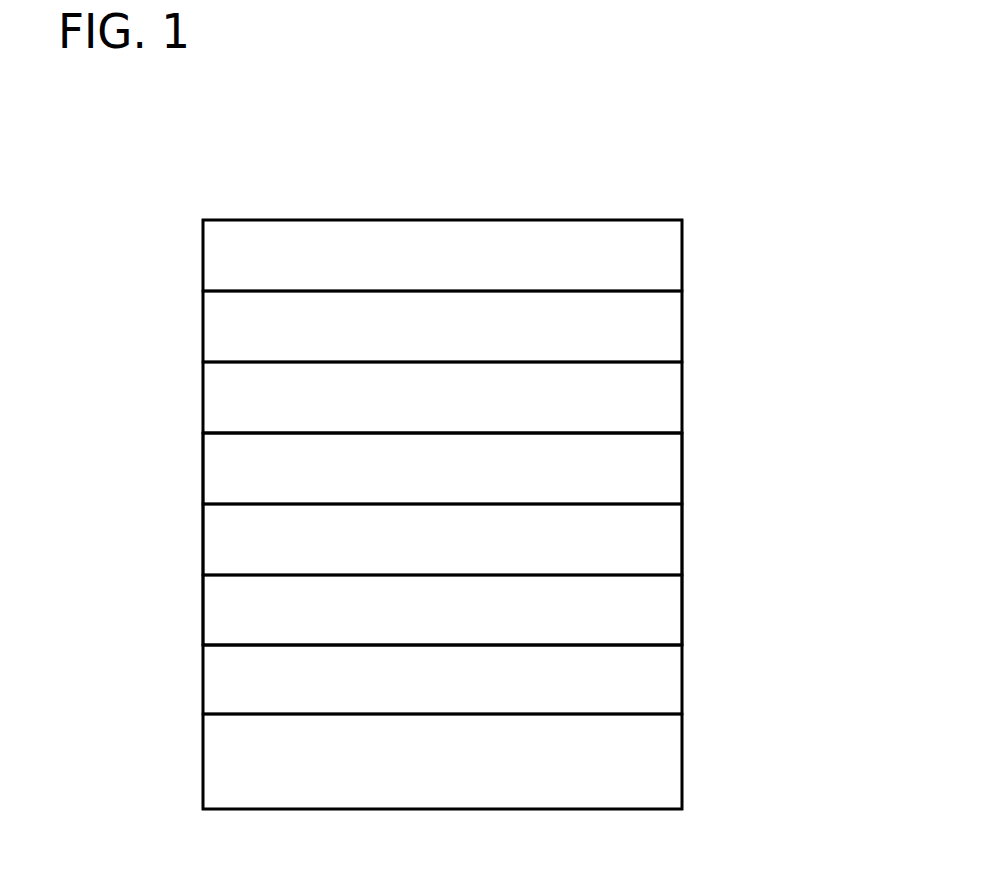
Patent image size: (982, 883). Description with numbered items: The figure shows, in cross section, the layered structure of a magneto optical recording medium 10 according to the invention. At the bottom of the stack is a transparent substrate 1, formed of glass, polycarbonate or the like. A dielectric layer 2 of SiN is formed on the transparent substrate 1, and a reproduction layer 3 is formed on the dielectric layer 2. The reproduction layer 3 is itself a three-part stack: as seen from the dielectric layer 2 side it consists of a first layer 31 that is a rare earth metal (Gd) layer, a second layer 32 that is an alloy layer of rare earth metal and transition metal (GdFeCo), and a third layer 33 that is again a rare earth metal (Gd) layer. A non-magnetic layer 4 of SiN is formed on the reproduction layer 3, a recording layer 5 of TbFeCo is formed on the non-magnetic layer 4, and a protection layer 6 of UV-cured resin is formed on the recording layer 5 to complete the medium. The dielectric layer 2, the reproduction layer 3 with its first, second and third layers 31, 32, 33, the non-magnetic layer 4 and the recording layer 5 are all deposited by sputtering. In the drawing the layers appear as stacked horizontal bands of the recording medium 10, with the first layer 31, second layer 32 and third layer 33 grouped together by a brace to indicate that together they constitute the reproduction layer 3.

The magneto optical recording medium 10 is at (731, 166).
The transparent substrate 1 is at (665, 766).
The dielectric layer 2 is at (667, 685).
The reproduction layer 3 is at (792, 455).
The first layer 31 is at (667, 616).
The second layer 32 is at (667, 546).
The third layer 33 is at (667, 475).
The non-magnetic layer 4 is at (667, 404).
The recording layer 5 is at (667, 333).
The protection layer 6 is at (667, 262).